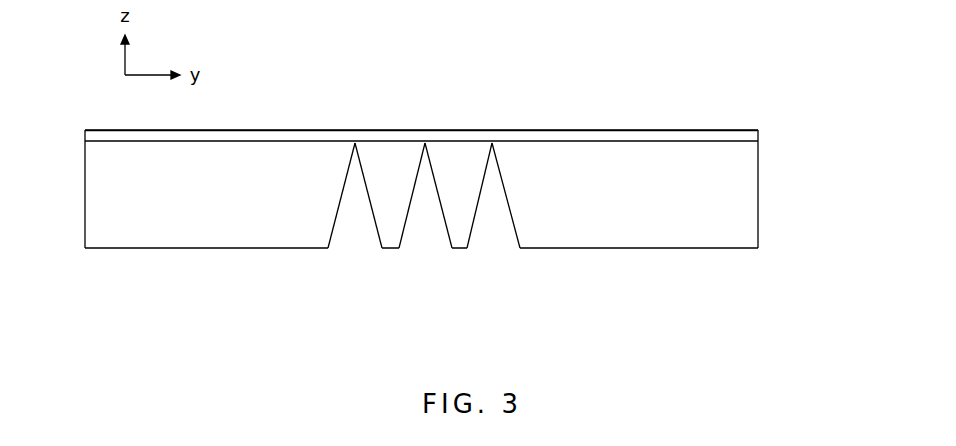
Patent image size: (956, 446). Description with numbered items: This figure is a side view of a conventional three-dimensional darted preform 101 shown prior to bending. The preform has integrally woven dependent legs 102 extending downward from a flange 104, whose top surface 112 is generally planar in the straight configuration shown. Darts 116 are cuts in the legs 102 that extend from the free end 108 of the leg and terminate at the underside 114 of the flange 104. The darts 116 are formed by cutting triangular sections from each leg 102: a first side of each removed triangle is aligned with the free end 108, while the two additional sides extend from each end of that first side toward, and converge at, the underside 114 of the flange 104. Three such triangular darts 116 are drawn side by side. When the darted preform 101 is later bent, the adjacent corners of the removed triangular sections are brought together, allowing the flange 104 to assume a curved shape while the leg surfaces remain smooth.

The darted preform 101 is at (450, 105).
The legs 102 is at (112, 228).
The flange 104 is at (655, 138).
The free end 108 is at (147, 248).
The top surface 112 is at (285, 130).
The underside 114 is at (725, 141).
The darts 116 is at (345, 242).